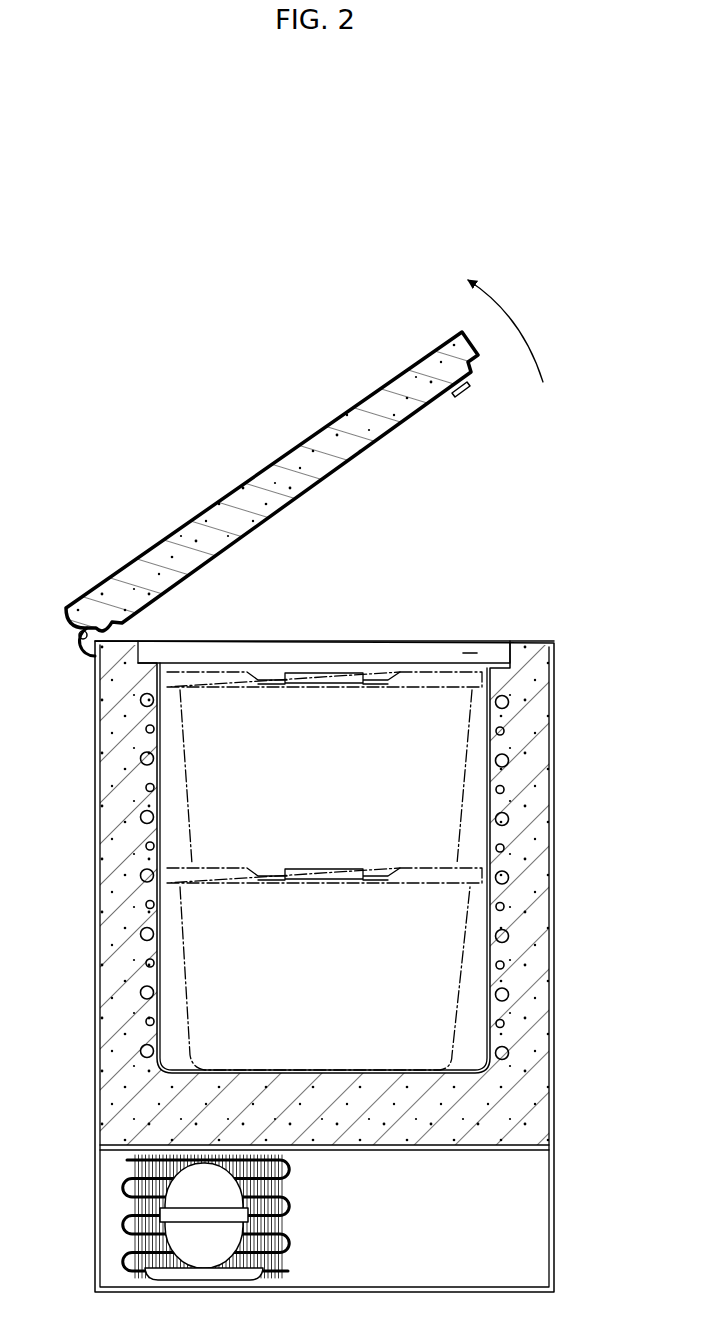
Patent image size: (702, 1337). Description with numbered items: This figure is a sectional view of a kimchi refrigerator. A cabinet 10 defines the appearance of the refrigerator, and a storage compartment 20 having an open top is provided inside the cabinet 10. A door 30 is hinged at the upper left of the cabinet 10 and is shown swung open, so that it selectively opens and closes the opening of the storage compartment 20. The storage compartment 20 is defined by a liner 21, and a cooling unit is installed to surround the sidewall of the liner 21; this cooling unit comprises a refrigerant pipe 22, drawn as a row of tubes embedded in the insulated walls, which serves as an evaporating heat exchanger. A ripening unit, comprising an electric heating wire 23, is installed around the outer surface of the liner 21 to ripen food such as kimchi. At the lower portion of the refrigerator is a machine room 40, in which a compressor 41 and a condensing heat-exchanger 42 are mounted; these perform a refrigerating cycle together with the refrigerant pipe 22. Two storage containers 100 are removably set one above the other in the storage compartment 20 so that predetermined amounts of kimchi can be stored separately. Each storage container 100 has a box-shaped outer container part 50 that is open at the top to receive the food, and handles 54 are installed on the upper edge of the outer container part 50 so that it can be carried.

The cabinet 10 is at (355, 786).
The storage compartment 20 is at (354, 937).
The liner 21 is at (487, 660).
The refrigerant pipe 22 is at (146, 872).
The electric heating wire 23 is at (533, 953).
The door 30 is at (280, 476).
The machine room 40 is at (324, 1217).
The compressor 41 is at (180, 1197).
The condensing heat-exchanger 42 is at (135, 1250).
The outer container part 50 is at (257, 825).
The handle 54 is at (350, 660).
The storage container 100 is at (420, 772).